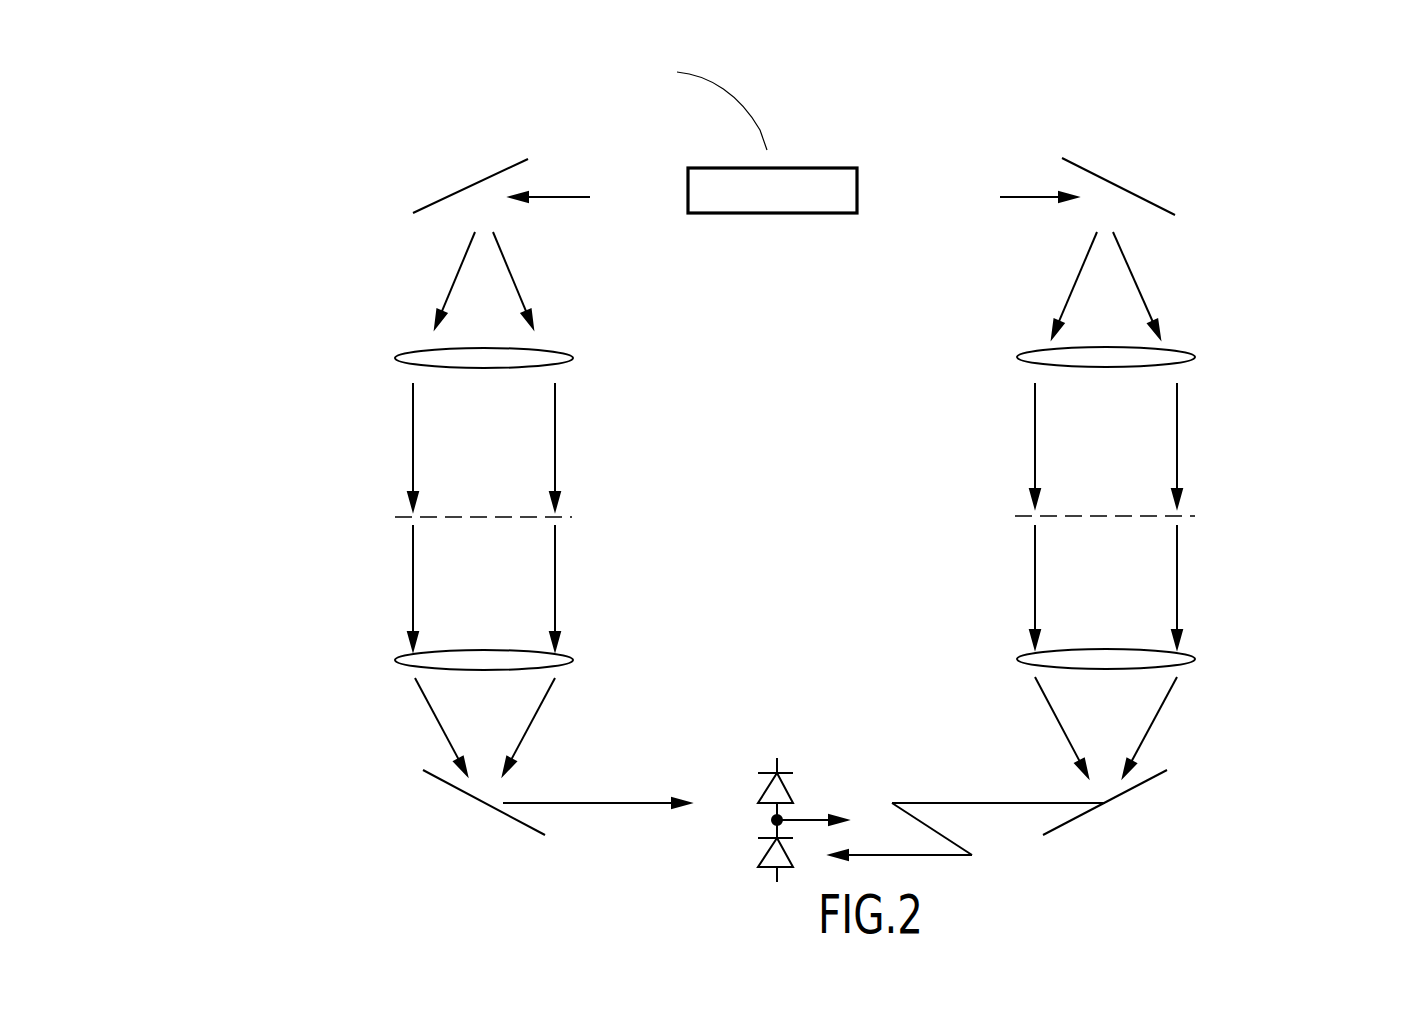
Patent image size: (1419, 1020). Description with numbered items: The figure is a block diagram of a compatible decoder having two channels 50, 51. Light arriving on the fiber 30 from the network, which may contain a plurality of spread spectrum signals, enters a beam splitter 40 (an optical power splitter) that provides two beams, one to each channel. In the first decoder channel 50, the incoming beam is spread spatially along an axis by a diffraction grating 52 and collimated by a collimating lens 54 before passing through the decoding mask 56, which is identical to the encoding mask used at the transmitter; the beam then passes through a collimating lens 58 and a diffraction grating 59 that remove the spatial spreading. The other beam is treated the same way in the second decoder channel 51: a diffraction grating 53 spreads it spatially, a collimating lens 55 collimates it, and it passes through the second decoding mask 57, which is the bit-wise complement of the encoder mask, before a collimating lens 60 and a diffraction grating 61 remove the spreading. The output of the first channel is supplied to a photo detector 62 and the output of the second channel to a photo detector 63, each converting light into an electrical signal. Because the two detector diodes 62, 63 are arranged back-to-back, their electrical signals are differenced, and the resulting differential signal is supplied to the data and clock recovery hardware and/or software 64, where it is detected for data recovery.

The fiber 30 is at (769, 158).
The beam splitter 40 is at (817, 168).
The first decoder channel 50 is at (334, 155).
The decoder channel 51 is at (1313, 198).
The diffraction grating 52 is at (462, 190).
The diffraction grating 53 is at (1150, 202).
The collimating lens 54 is at (555, 352).
The collimating lens 55 is at (1180, 347).
The decoding mask 56 is at (560, 518).
The second decoding mask 57 is at (1028, 513).
The collimating lens 58 is at (567, 653).
The diffraction grating 59 is at (465, 797).
The collimating lens 60 is at (1020, 658).
The diffraction grating 61 is at (1063, 823).
The photo detector 62 is at (760, 792).
The photo detector 63 is at (757, 852).
The data and clock recovery hardware and/or software 64 is at (941, 822).